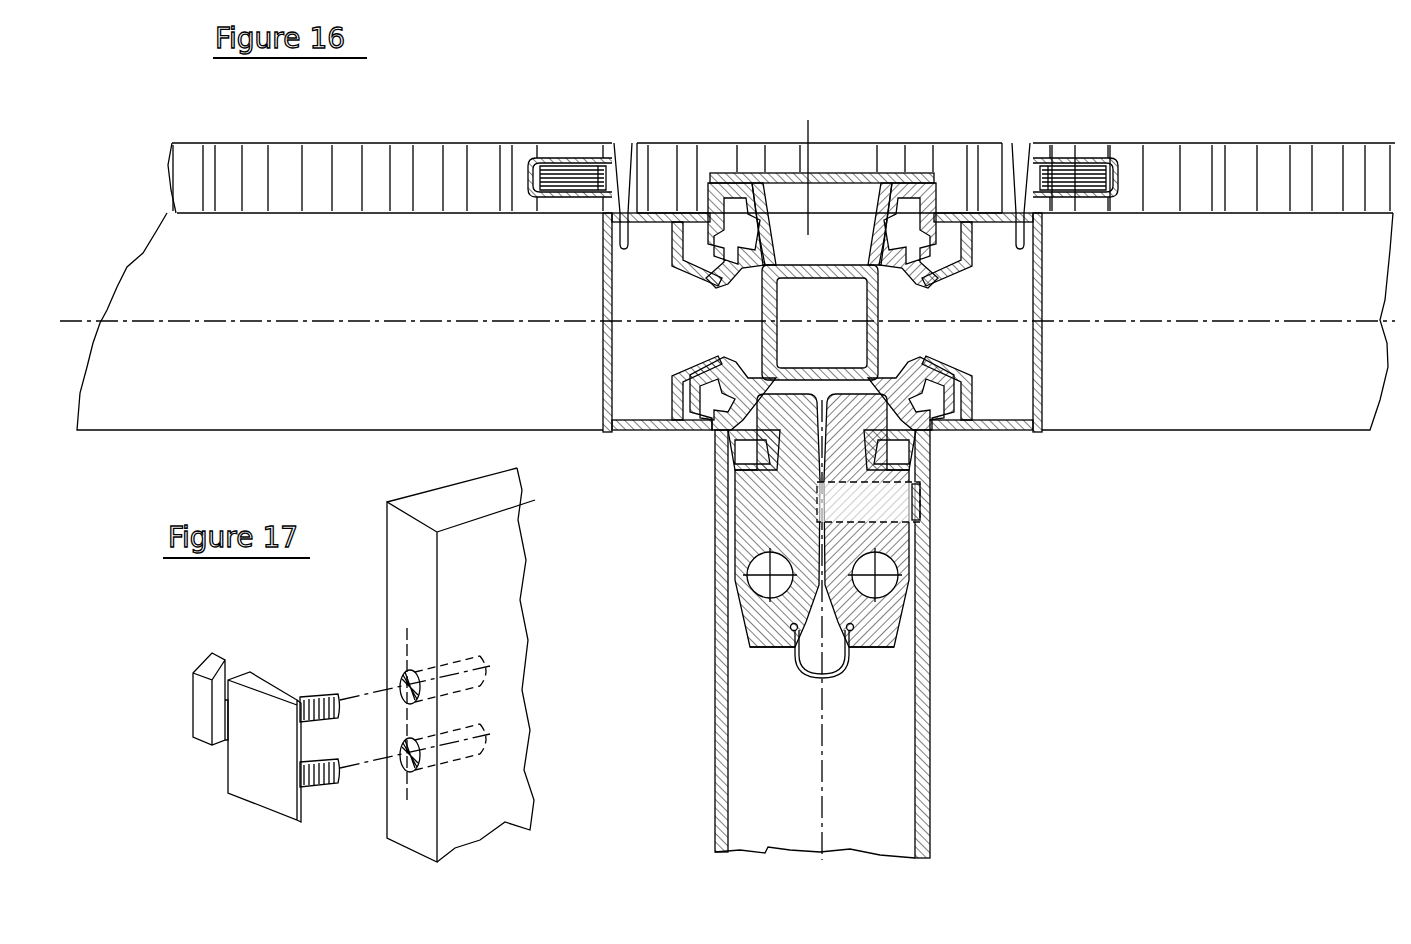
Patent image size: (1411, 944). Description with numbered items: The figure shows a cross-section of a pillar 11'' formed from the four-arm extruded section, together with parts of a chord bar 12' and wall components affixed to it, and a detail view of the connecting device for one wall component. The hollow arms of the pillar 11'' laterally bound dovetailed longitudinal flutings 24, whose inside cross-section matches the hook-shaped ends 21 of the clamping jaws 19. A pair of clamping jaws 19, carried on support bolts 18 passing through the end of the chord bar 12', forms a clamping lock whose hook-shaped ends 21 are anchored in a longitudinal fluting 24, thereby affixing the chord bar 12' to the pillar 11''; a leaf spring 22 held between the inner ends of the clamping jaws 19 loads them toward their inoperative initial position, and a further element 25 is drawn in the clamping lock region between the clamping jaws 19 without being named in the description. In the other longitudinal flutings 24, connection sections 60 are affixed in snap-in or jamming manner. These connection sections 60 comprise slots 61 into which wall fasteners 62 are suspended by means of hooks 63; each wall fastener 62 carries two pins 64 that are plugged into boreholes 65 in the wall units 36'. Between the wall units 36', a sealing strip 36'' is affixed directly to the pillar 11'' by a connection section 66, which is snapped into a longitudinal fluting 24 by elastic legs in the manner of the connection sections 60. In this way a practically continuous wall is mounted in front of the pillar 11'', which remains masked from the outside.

In FIG. 16, the pillar 11'' is at (845, 301).
In FIG. 16, the chord bar 12' is at (876, 630).
In FIG. 16, the support bolts 18 is at (755, 647).
In FIG. 16, the clamping jaws 19 is at (843, 557).
In FIG. 16, the hook-shaped ends 21 is at (780, 475).
In FIG. 16, the leaf spring 22 is at (810, 682).
In FIG. 16, the longitudinal flutings 24 is at (745, 303).
In FIG. 16, the clamping screw 25 is at (775, 503).
In FIG. 16, the wall units 36' is at (781, 153).
In FIG. 17, the wall units 36' is at (453, 652).
In FIG. 16, the sealing strips 36'' is at (819, 143).
In FIG. 16, the connection sections 60 is at (603, 371).
In FIG. 16, the slots 61 is at (603, 222).
In FIG. 16, the wall fasteners 62 is at (623, 205).
In FIG. 17, the wall fasteners 62 is at (252, 708).
In FIG. 17, the hooks 63 is at (212, 676).
In FIG. 16, the pins 64 is at (563, 165).
In FIG. 17, the pins 64 is at (338, 695).
In FIG. 16, the boreholes 65 is at (528, 163).
In FIG. 17, the boreholes 65 is at (476, 660).
In FIG. 16, the connection section 66 is at (808, 120).